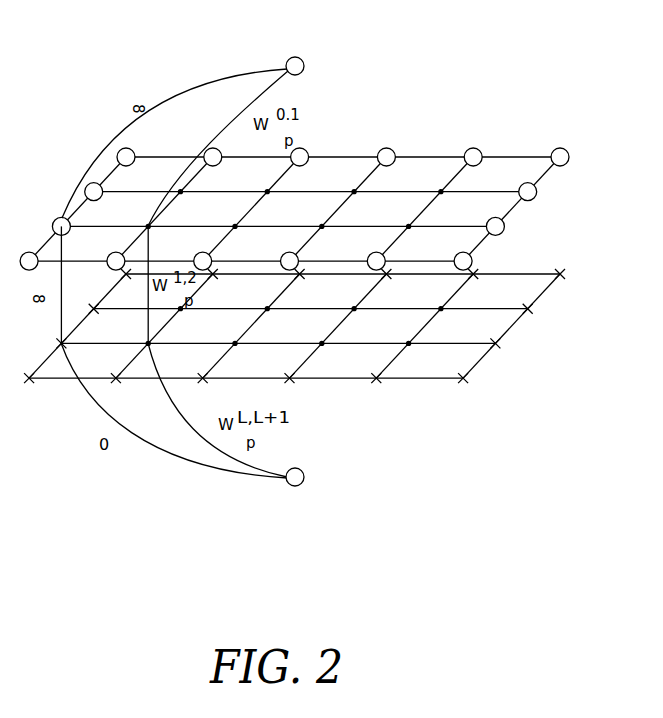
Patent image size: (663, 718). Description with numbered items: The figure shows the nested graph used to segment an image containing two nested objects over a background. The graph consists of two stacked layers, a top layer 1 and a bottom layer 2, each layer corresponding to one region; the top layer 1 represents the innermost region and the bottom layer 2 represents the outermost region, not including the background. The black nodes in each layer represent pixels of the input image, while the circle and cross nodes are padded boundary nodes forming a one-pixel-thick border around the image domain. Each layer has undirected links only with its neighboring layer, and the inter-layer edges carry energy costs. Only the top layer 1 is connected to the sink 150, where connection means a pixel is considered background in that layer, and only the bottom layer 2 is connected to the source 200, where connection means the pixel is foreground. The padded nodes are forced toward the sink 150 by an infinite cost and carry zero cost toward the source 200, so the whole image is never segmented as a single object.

The sink 150 is at (317, 55).
The source 200 is at (315, 483).
The top layer 1 is at (294, 196).
The bottom layer 2 is at (294, 316).